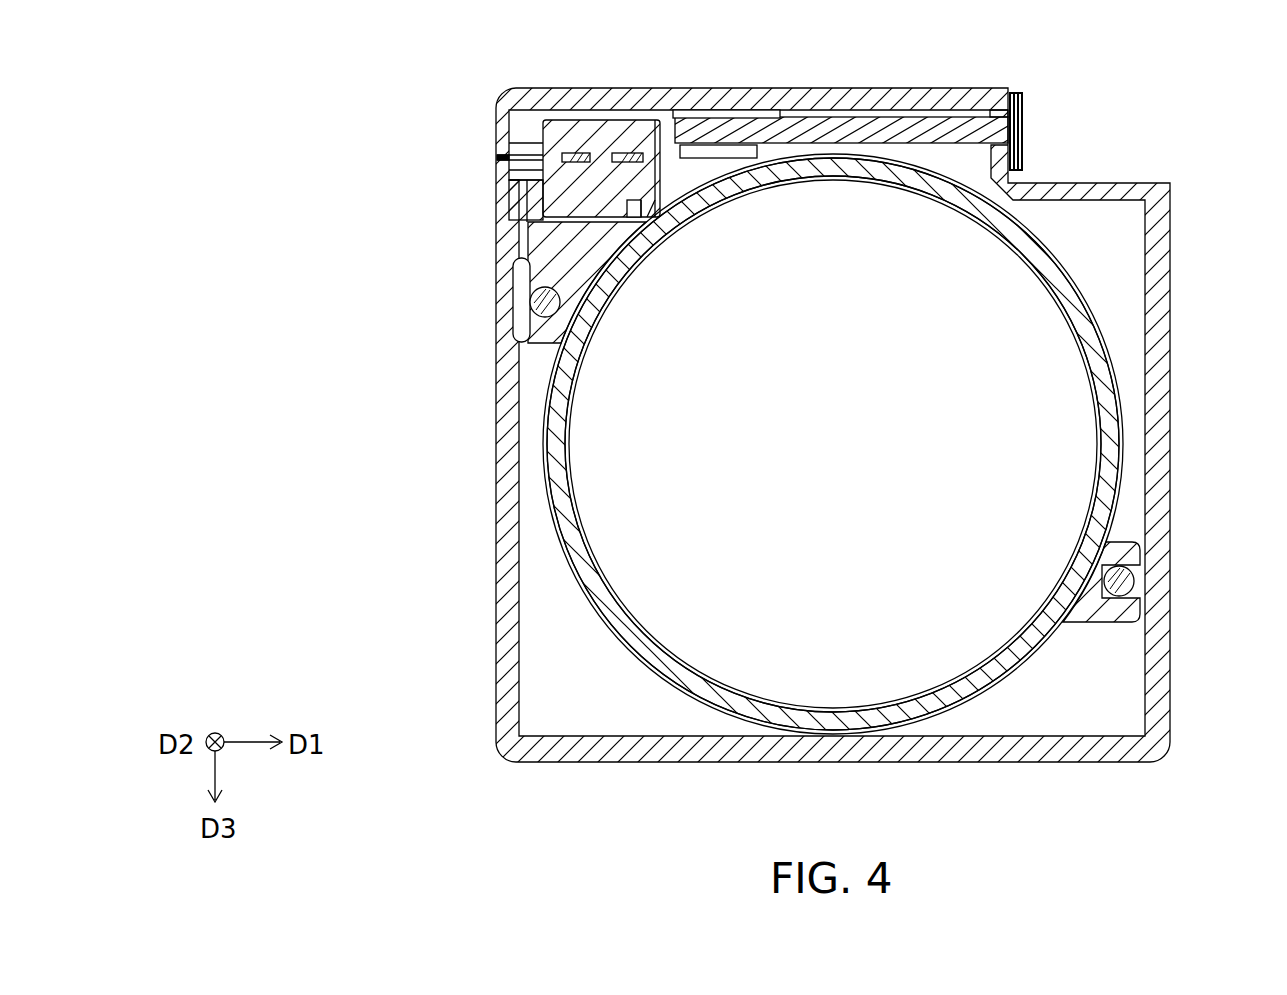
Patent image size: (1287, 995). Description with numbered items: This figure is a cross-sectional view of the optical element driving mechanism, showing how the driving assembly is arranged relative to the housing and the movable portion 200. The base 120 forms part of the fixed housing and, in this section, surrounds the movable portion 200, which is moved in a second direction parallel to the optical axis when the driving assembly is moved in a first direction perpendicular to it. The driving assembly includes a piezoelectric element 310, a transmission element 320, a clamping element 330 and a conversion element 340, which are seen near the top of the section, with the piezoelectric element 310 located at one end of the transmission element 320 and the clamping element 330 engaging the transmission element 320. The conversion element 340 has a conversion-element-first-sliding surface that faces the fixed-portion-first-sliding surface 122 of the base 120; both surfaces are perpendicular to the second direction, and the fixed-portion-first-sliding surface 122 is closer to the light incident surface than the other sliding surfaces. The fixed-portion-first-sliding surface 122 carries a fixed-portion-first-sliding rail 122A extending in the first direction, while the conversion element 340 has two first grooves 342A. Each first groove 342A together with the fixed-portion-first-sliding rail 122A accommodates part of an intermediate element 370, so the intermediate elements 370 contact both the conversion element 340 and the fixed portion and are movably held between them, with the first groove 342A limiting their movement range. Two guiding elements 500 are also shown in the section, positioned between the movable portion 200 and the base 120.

The base 120 is at (858, 95).
The fixed-portion-first-sliding surface 122 is at (512, 128).
The fixed-portion-first-sliding rail 122A is at (518, 159).
The movable portion 200 is at (1100, 318).
The piezoelectric element 310 is at (1024, 131).
The transmission element 320 is at (950, 130).
The clamping element 330 is at (742, 112).
The conversion element 340 is at (632, 125).
The first groove 342A is at (600, 196).
The intermediate element 370 is at (620, 152).
The guiding element 500 is at (540, 302).